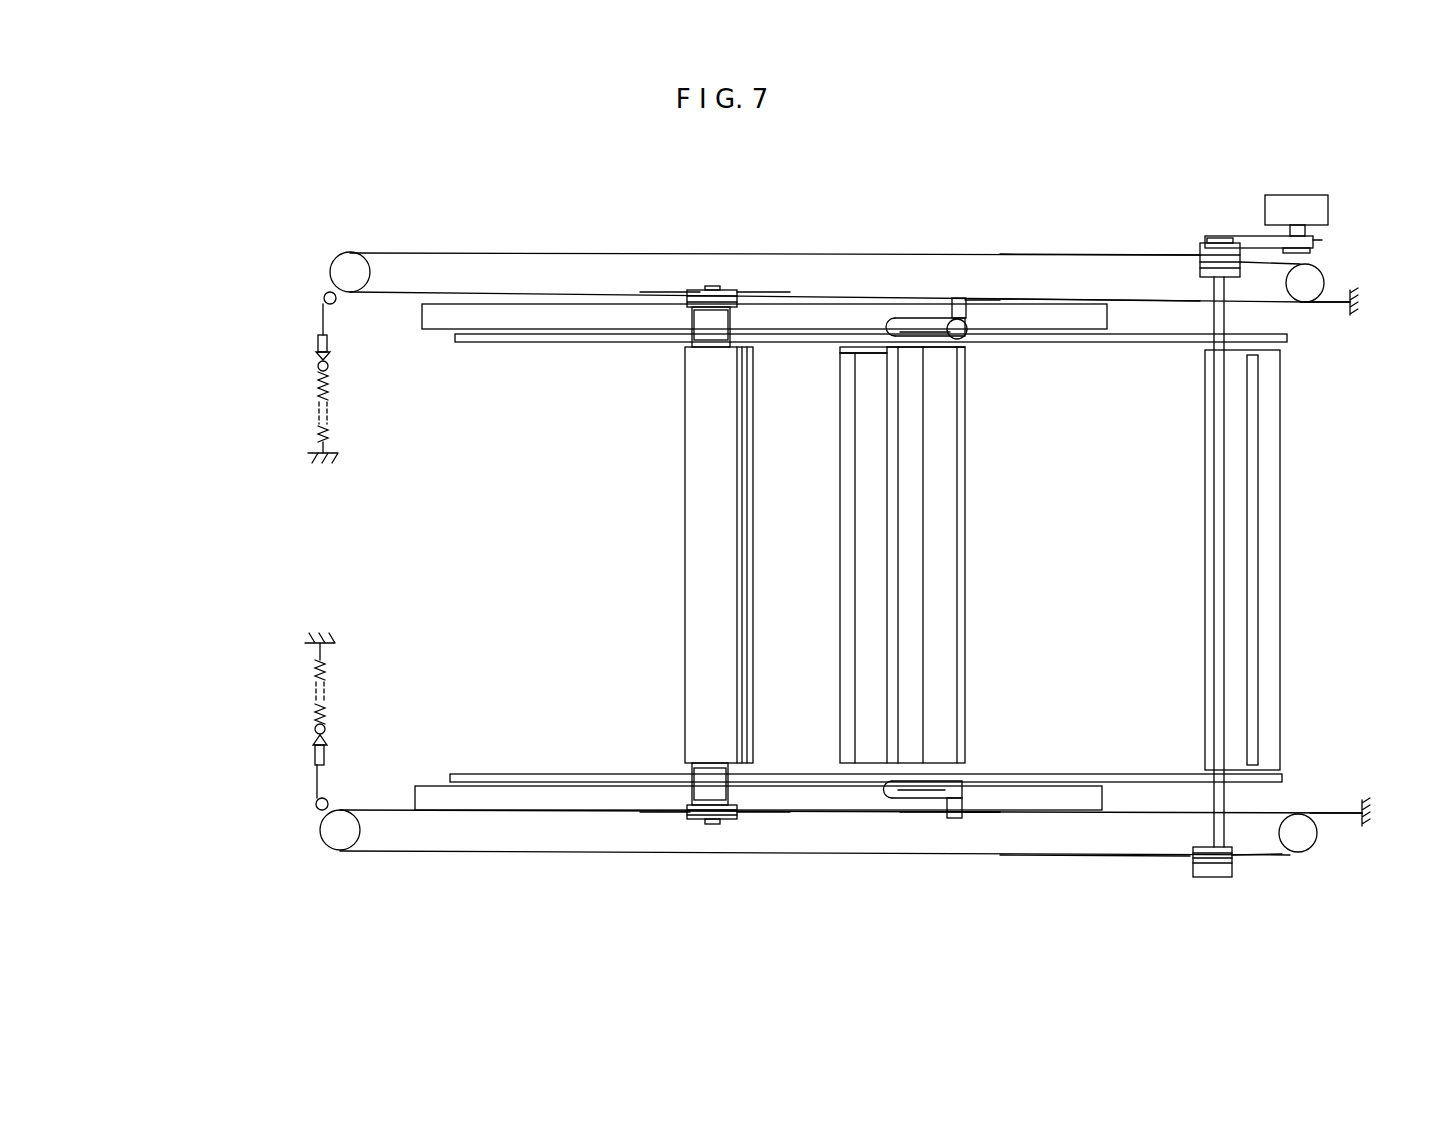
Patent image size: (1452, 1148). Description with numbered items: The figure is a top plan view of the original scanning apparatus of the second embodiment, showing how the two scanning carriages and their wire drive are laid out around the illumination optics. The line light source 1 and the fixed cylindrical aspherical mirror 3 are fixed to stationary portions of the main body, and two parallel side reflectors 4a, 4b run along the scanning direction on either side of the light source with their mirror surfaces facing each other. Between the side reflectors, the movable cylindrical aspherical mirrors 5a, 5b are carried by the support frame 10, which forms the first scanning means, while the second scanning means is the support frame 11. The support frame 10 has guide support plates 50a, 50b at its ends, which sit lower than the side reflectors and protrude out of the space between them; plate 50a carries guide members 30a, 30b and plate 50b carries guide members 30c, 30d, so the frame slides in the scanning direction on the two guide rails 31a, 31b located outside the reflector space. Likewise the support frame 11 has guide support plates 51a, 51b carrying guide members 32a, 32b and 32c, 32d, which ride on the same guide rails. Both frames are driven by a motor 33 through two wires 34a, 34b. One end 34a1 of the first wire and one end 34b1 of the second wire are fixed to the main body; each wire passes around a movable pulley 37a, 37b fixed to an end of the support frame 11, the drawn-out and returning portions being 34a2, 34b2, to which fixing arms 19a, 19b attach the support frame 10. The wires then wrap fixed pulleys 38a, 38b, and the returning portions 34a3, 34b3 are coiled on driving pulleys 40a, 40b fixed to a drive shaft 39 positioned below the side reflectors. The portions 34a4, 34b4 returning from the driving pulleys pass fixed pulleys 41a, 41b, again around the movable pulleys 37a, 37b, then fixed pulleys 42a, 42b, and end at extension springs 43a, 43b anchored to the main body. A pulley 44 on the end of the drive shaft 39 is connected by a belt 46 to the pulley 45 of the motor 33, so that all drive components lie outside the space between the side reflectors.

The line light source 1 is at (1282, 420).
The fixed cylindrical aspherical mirror 3 is at (1262, 735).
The side reflector 4a is at (1290, 340).
The side reflector 4b is at (1285, 778).
The cylindrical aspherical reflecting mirror 5a is at (938, 355).
The cylindrical aspherical reflecting mirror 5b is at (876, 360).
The support frame 10 is at (968, 712).
The support frame 11 is at (688, 710).
The fixing arm 19a is at (960, 298).
The fixing arm 19b is at (962, 815).
The guide member 30a is at (928, 332).
The guide member 30b is at (988, 300).
The guide member 30c is at (895, 800).
The guide member 30d is at (1005, 820).
The guide rail 31a is at (470, 312).
The guide rail 31b is at (458, 810).
The guide member 32a is at (688, 296).
The guide member 32b is at (742, 300).
The guide member 32c is at (700, 820).
The guide member 32d is at (742, 806).
The motor 33 is at (1316, 194).
The wire 34a is at (1156, 246).
The end of wire 34a1 is at (1355, 302).
The wire portion 34a2 is at (1108, 298).
The wire portion 34a3 is at (1248, 235).
The wire portion 34a4 is at (1122, 253).
The wire 34b is at (1172, 866).
The end of wire 34b1 is at (1345, 818).
The wire portion 34b2 is at (1085, 820).
The wire portion 34b3 is at (1268, 855).
The wire portion 34b4 is at (960, 818).
The movable pulley 37a is at (716, 288).
The movable pulley 37b is at (725, 816).
The fixed pulley 38a is at (1326, 283).
The fixed pulley 38b is at (1310, 850).
The drive shaft 39 is at (1227, 495).
The driving pulley 40a is at (1206, 242).
The driving pulley 40b is at (1225, 878).
The fixed pulley 41a is at (349, 268).
The fixed pulley 41b is at (345, 842).
The fixed pulley 42a is at (326, 293).
The fixed pulley 42b is at (316, 806).
The extension spring 43a is at (318, 378).
The extension spring 43b is at (312, 718).
The pulley 44 is at (1222, 237).
The pulley 45 is at (1318, 248).
The belt 46 is at (1293, 247).
The guide support plate 50a is at (905, 326).
The guide support plate 50b is at (930, 798).
The guide support plate 51a is at (732, 322).
The guide support plate 51b is at (690, 800).